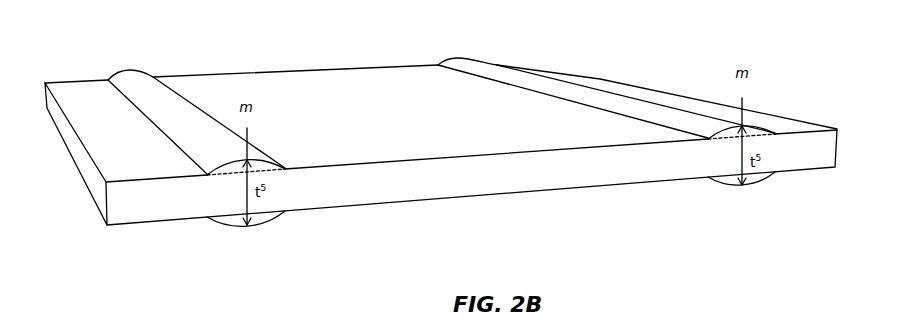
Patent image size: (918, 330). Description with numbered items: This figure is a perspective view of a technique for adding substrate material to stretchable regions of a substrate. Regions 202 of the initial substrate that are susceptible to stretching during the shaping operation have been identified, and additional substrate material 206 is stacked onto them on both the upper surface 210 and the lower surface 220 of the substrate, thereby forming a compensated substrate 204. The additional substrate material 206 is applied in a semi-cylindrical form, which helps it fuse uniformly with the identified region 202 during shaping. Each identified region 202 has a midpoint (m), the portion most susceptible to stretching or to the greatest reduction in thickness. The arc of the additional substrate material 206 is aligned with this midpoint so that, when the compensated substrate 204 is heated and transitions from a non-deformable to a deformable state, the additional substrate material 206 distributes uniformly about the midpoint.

The identified region 202 is at (520, 20).
The compensated substrate 204 is at (672, 82).
The additional substrate material 206 is at (213, 215).
The upper surface 210 is at (441, 123).
The lower surface 220 is at (508, 208).